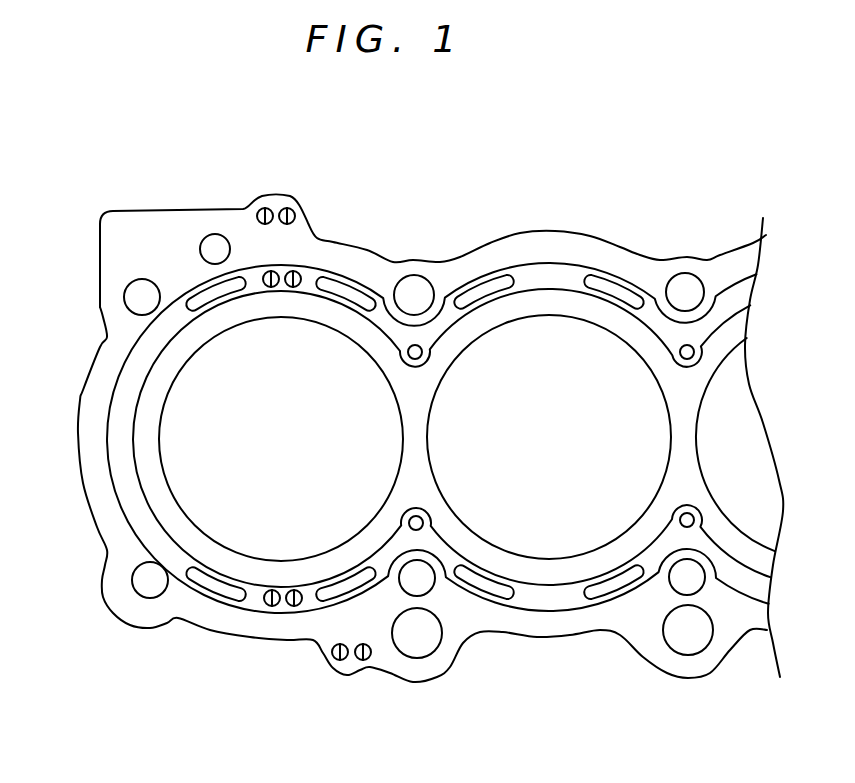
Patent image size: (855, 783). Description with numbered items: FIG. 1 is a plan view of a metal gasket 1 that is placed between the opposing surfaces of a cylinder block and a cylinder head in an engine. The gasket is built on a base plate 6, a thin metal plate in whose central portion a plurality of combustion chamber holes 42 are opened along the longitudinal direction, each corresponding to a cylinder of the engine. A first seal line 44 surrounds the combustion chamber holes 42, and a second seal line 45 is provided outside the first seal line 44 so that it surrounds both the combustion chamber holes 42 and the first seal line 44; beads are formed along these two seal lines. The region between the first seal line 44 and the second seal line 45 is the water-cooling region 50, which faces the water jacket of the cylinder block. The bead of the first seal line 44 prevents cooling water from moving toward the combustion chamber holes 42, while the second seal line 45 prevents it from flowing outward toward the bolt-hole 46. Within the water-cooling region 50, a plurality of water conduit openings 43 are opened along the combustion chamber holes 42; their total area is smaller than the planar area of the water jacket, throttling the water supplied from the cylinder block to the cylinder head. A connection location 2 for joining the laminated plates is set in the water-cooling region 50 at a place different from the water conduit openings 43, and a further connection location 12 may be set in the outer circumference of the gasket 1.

The metal gasket 1 is at (544, 182).
The connection location 2 is at (303, 275).
The base plate 6 is at (127, 247).
The connection location 12 is at (268, 210).
The combustion chamber hole 42 is at (178, 503).
The water conduit opening 43 is at (202, 302).
The first seal line 44 is at (130, 448).
The second seal line 45 is at (100, 383).
The bolt-hole 46 is at (150, 582).
The water-cooling region 50 is at (130, 485).